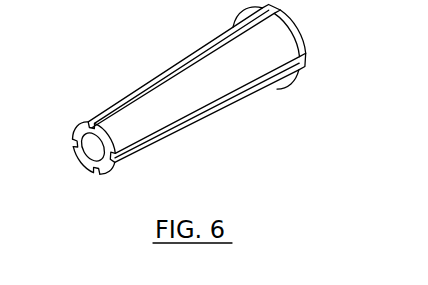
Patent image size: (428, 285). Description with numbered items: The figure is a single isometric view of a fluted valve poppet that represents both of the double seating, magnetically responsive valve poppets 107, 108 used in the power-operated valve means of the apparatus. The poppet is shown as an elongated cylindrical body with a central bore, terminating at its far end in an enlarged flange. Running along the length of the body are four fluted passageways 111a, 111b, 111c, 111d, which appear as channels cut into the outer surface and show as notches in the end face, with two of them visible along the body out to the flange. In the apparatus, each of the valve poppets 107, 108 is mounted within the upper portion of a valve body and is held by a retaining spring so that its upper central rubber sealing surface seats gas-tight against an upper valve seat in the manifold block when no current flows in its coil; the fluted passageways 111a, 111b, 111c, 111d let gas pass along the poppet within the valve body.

The valve poppet 107 is at (167, 99).
The valve poppet 108 is at (167, 99).
The fluted passageway 111a is at (73, 139).
The fluted passageway 111b is at (95, 168).
The fluted passageway 111c is at (113, 163).
The fluted passageway 111d is at (88, 123).